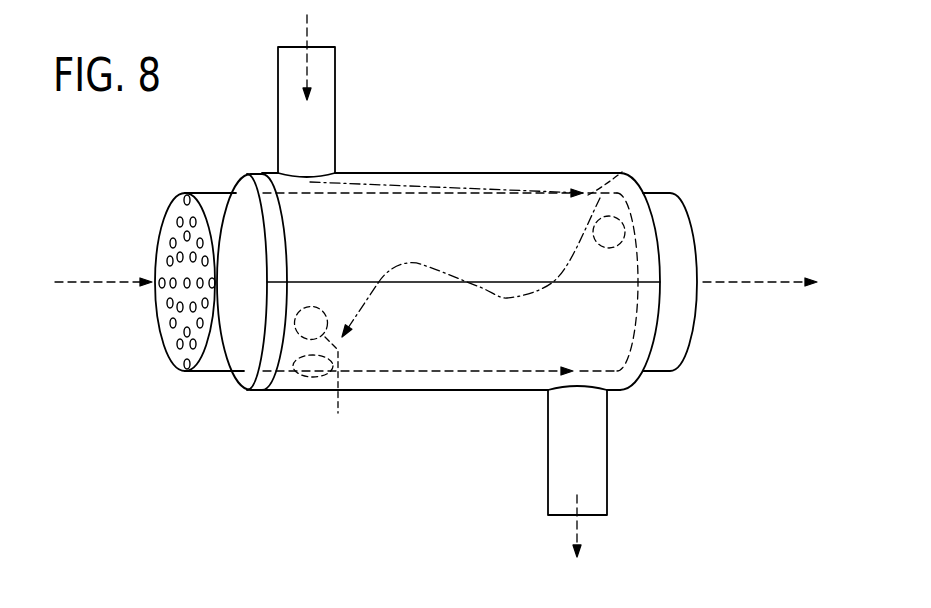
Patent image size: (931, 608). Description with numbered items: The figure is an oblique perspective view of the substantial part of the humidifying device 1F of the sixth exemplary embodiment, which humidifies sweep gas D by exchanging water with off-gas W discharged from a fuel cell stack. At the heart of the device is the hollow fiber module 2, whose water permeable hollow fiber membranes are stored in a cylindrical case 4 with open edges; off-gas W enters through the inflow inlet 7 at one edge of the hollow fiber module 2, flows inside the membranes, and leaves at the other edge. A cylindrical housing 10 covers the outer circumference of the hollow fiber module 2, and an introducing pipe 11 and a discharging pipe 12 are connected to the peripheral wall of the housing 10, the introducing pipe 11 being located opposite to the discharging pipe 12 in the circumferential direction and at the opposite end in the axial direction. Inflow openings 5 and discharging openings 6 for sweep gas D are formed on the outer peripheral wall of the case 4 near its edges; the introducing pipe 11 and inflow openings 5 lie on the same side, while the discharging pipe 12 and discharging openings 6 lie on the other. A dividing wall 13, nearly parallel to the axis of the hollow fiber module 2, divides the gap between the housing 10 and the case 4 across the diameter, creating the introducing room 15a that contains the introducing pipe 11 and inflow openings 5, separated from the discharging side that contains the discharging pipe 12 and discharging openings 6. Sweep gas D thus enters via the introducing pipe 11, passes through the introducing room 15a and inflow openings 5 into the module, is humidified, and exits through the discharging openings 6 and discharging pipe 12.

The humidifying device 1F is at (222, 152).
The hollow fiber module 2 is at (187, 188).
The case 4 is at (205, 379).
The inflow openings 5 is at (612, 197).
The discharging openings 6 is at (297, 378).
The inflow inlet 7 is at (182, 342).
The housing 10 is at (615, 392).
The introducing pipe 11 is at (335, 104).
The discharging pipe 12 is at (607, 452).
The dividing wall 13 is at (490, 281).
The introducing room 15a is at (526, 182).
The sweep gas D is at (305, 34).
The off-gas W is at (748, 283).